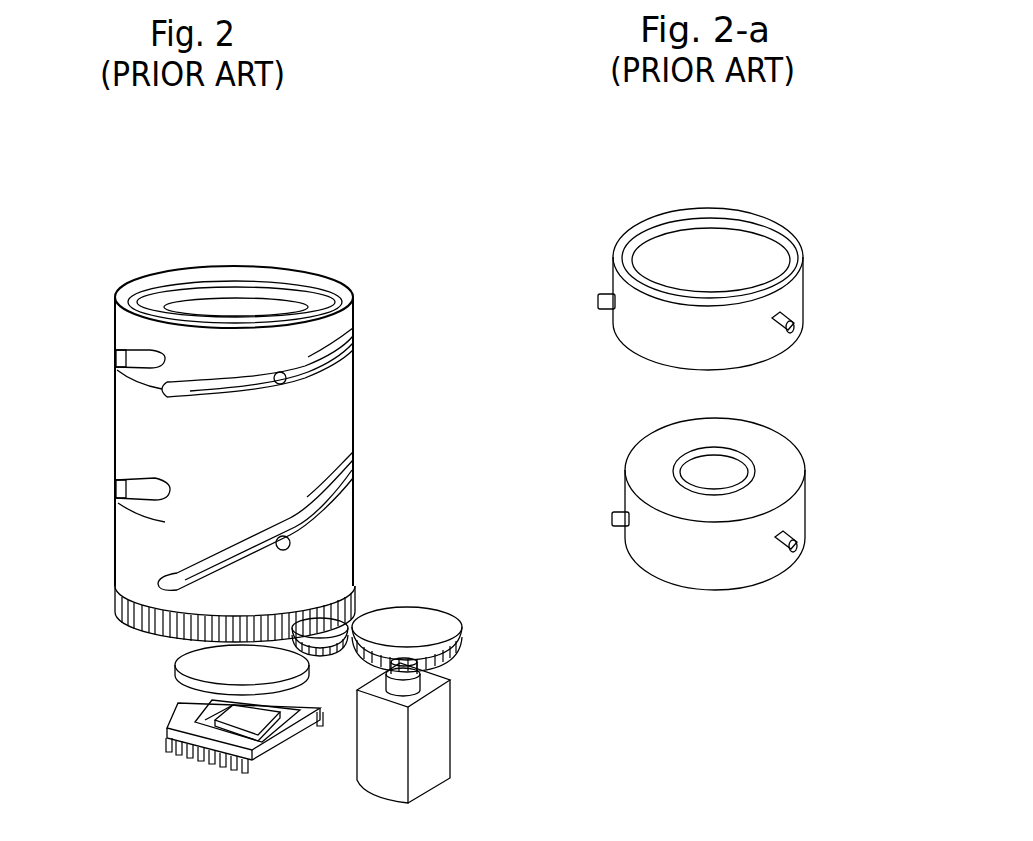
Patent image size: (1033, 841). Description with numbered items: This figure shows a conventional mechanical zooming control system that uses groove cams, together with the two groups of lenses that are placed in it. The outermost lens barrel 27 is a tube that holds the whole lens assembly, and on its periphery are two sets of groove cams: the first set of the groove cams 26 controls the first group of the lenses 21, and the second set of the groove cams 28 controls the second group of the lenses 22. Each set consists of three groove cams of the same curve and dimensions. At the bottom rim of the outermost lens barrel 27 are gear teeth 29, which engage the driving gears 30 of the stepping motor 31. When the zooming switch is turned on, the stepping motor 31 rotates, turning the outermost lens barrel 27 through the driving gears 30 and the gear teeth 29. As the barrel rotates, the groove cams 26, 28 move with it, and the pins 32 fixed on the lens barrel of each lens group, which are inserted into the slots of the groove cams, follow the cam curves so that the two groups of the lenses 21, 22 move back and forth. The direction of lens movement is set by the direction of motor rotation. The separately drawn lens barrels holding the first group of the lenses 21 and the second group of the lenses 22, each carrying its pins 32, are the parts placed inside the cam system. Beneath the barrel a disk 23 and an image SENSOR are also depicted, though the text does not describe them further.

In FIG. 2, the first group of the lenses 21 is at (258, 303).
In FIG. 2-a, the first group of the lenses 21 is at (727, 250).
In FIG. 2, the second group of the lenses 22 is at (236, 307).
In FIG. 2-a, the second group of the lenses 22 is at (728, 462).
In FIG. 2, the disk / gear plate 23 is at (180, 667).
In FIG. 2, the first set of the groove cams 26 is at (173, 398).
In FIG. 2, the outermost lens barrel 27 is at (330, 430).
In FIG. 2, the second set of the groove cams 28 is at (163, 597).
In FIG. 2, the gear teeth 29 is at (135, 606).
In FIG. 2, the driving gears 30 is at (355, 617).
In FIG. 2, the stepping motor 31 is at (437, 737).
In FIG. 2, the pins 32 is at (117, 355).
In FIG. 2-a, the pins 32 is at (598, 302).
In FIG. 2, the image sensor SENSOR is at (180, 703).